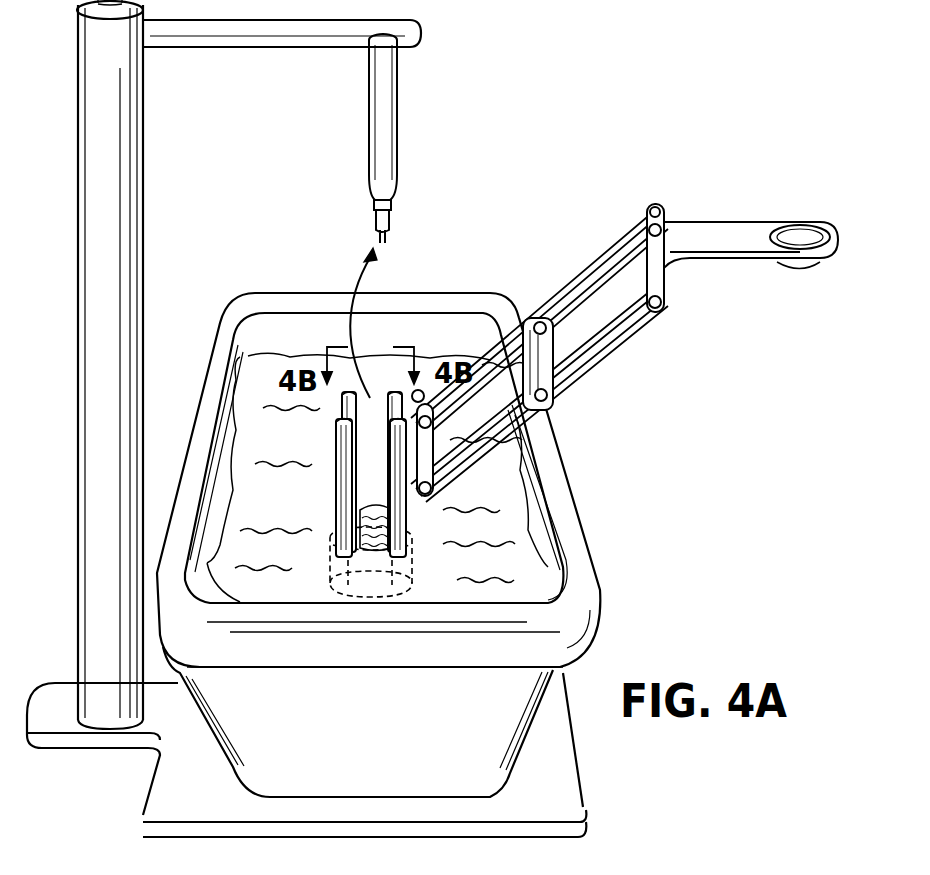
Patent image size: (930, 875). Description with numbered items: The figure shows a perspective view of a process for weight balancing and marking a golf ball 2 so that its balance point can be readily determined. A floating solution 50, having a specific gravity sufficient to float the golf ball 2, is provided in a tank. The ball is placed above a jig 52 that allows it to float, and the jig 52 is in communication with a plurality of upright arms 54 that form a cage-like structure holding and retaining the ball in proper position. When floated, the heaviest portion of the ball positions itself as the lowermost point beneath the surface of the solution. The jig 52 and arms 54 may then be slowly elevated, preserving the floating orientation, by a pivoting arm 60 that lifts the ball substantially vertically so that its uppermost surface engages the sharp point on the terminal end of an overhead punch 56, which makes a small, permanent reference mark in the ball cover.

The golf ball 2 is at (367, 505).
The floating solution 50 is at (270, 427).
The jig 52 is at (417, 587).
The upright arms 54 is at (407, 513).
The overhead punch 56 is at (395, 225).
The pivoting arm 60 is at (580, 360).